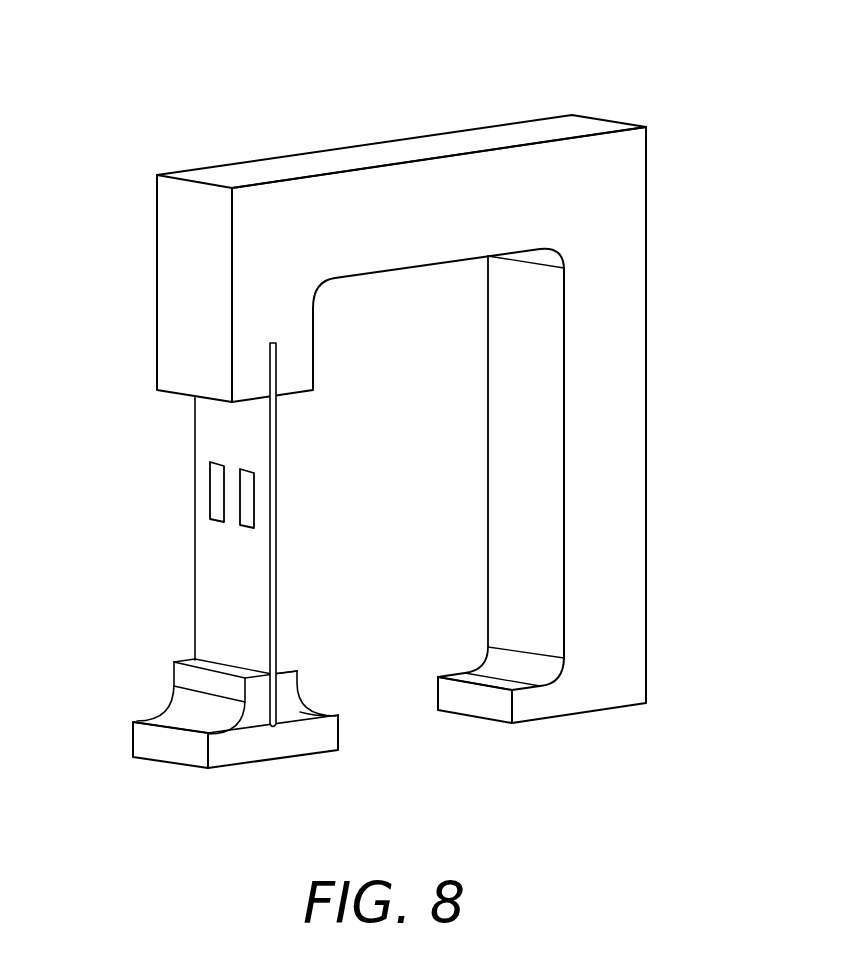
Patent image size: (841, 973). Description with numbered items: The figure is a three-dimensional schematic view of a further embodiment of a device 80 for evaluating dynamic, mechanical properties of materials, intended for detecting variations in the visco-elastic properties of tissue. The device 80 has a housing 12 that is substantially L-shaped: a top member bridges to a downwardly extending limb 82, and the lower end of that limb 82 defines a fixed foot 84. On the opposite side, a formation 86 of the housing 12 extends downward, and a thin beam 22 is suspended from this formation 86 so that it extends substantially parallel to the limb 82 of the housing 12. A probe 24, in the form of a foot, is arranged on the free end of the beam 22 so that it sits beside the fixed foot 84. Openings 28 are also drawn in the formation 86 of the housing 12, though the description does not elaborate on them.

The device 80 is at (178, 123).
The housing 12 is at (147, 297).
The beam 22 is at (277, 578).
The probe 24 is at (248, 764).
The slots 28 is at (218, 493).
The limb 82 is at (620, 428).
The fixed foot 84 is at (555, 722).
The formation 86 is at (172, 366).